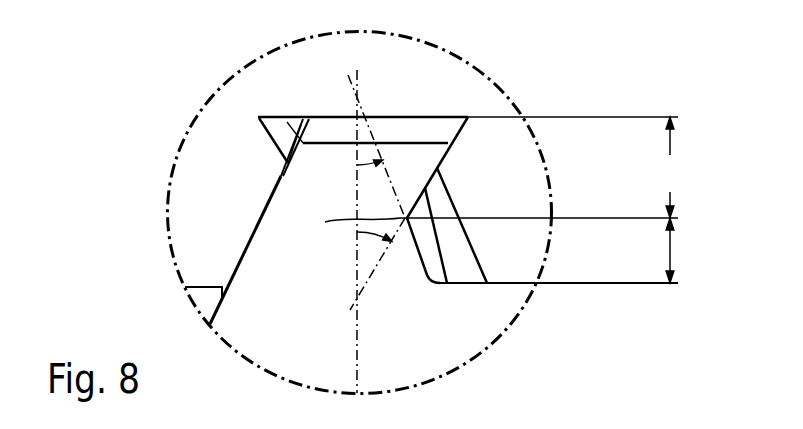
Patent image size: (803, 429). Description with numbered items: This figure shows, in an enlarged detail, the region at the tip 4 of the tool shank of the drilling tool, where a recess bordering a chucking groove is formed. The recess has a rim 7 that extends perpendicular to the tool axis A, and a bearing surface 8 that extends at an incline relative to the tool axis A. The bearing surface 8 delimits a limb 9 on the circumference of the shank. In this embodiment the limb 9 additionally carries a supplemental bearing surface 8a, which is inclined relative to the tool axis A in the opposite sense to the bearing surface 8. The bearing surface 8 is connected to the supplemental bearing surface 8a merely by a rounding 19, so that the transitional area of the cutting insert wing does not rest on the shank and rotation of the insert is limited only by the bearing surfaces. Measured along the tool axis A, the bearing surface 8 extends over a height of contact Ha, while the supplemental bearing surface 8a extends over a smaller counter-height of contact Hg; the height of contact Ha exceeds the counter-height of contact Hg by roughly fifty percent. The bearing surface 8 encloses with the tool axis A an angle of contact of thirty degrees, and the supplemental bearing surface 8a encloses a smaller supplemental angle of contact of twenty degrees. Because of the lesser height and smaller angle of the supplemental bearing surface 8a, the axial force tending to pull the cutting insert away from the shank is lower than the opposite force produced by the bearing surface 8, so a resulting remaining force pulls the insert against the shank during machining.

The tip 4 is at (400, 70).
The limb 9 is at (414, 116).
The bearing surface 8 is at (445, 153).
The supplemental bearing surface 8a is at (423, 248).
The rounding 19 is at (488, 226).
The rim 7 is at (513, 282).
The tool axis A is at (358, 360).
The height of contact Ha is at (671, 167).
The counter-height of contact Hg is at (676, 250).